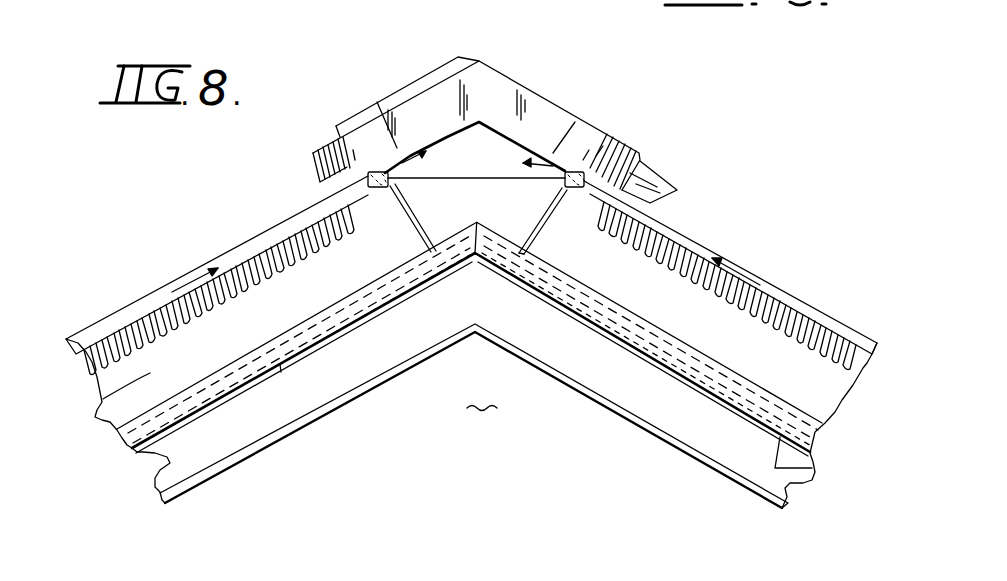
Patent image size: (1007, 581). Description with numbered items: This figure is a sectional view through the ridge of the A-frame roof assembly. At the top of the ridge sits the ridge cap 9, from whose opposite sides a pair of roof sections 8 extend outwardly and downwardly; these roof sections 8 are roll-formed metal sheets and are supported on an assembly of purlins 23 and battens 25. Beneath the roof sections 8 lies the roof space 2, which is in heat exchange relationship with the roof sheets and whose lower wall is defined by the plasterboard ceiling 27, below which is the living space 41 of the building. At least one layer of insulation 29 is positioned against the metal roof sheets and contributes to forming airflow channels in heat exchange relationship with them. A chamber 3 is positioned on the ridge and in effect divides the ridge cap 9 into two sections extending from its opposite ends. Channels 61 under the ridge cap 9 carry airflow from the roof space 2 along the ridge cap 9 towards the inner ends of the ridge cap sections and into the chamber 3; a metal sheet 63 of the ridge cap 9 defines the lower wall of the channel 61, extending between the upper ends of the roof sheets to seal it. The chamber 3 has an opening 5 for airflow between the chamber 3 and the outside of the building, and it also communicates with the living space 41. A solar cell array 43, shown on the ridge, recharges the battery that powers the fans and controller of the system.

The roof space 2 is at (97, 409).
The chamber 3 is at (479, 60).
The opening 5 is at (677, 190).
The roof sections 8 is at (147, 297).
The ridge cap 9 is at (497, 127).
The purlins 23 is at (668, 422).
The battens 25 is at (545, 224).
The plasterboard ceiling 27 is at (280, 364).
The insulation 29 is at (270, 249).
The living space 41 is at (481, 396).
The solar cell array 43 is at (377, 104).
The channels 61 is at (465, 143).
The metal sheet 63 is at (452, 186).